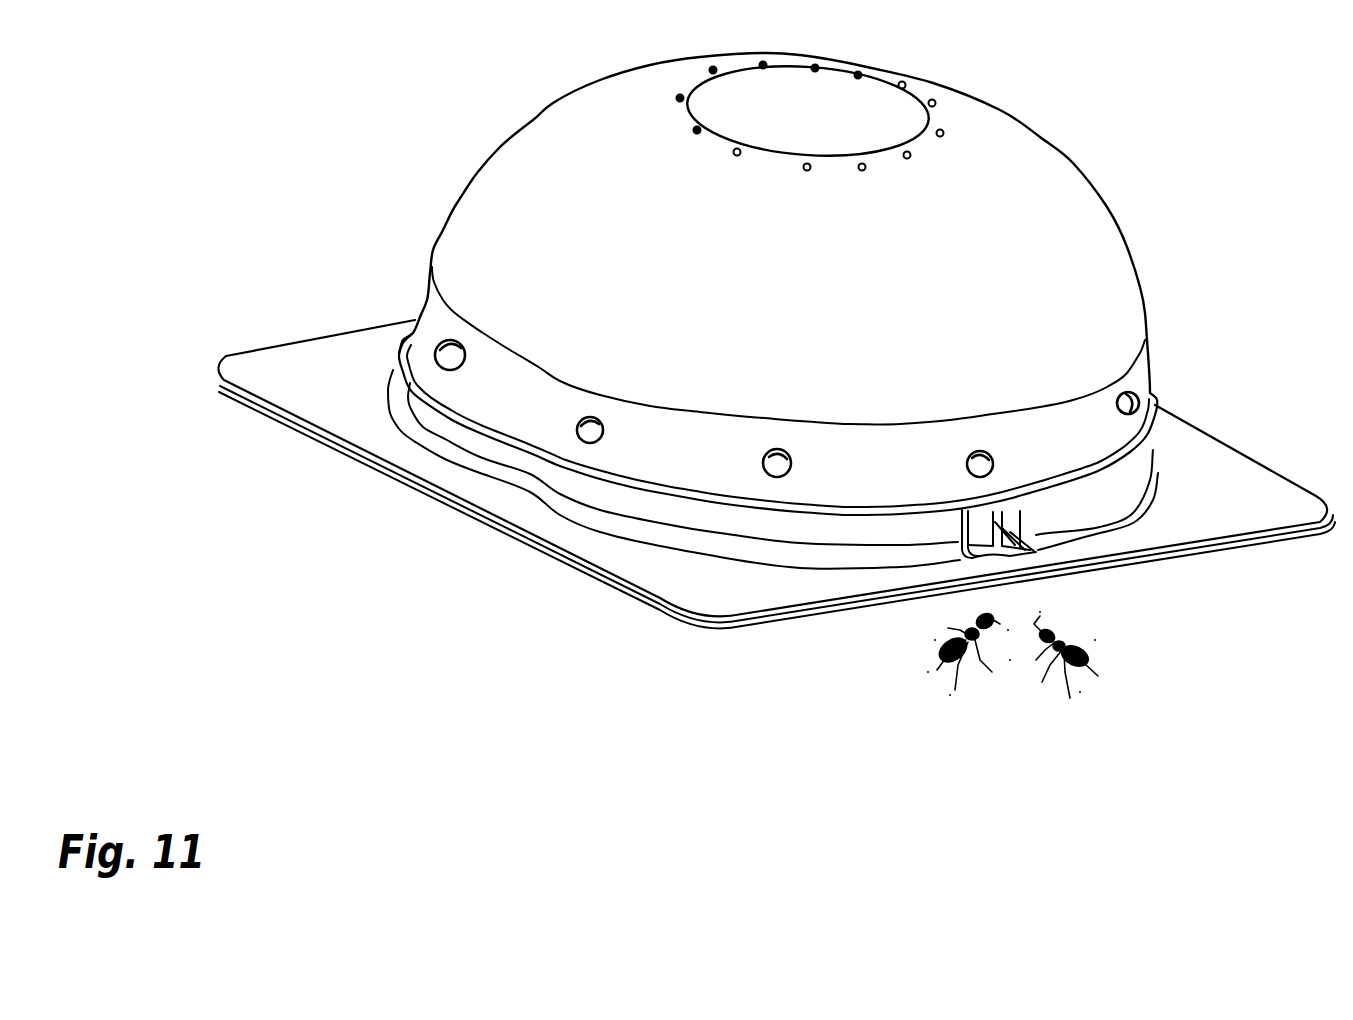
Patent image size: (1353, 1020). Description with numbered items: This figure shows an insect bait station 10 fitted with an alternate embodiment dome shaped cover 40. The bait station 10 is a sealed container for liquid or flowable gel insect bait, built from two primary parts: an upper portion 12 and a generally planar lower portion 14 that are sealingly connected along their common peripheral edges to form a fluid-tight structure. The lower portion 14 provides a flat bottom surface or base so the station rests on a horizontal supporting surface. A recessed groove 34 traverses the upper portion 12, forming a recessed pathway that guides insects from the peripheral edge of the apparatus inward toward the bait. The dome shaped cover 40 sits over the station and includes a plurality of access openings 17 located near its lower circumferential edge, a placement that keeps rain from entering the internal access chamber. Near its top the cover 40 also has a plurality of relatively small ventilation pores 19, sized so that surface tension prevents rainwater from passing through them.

The insect bait station 10 is at (378, 126).
The upper portion 12 is at (302, 393).
The lower portion 14 is at (318, 437).
The access openings 17 is at (598, 419).
The ventilation pores 19 is at (735, 151).
The recessed groove 34 is at (1030, 545).
The dome shaped cover 40 is at (458, 248).